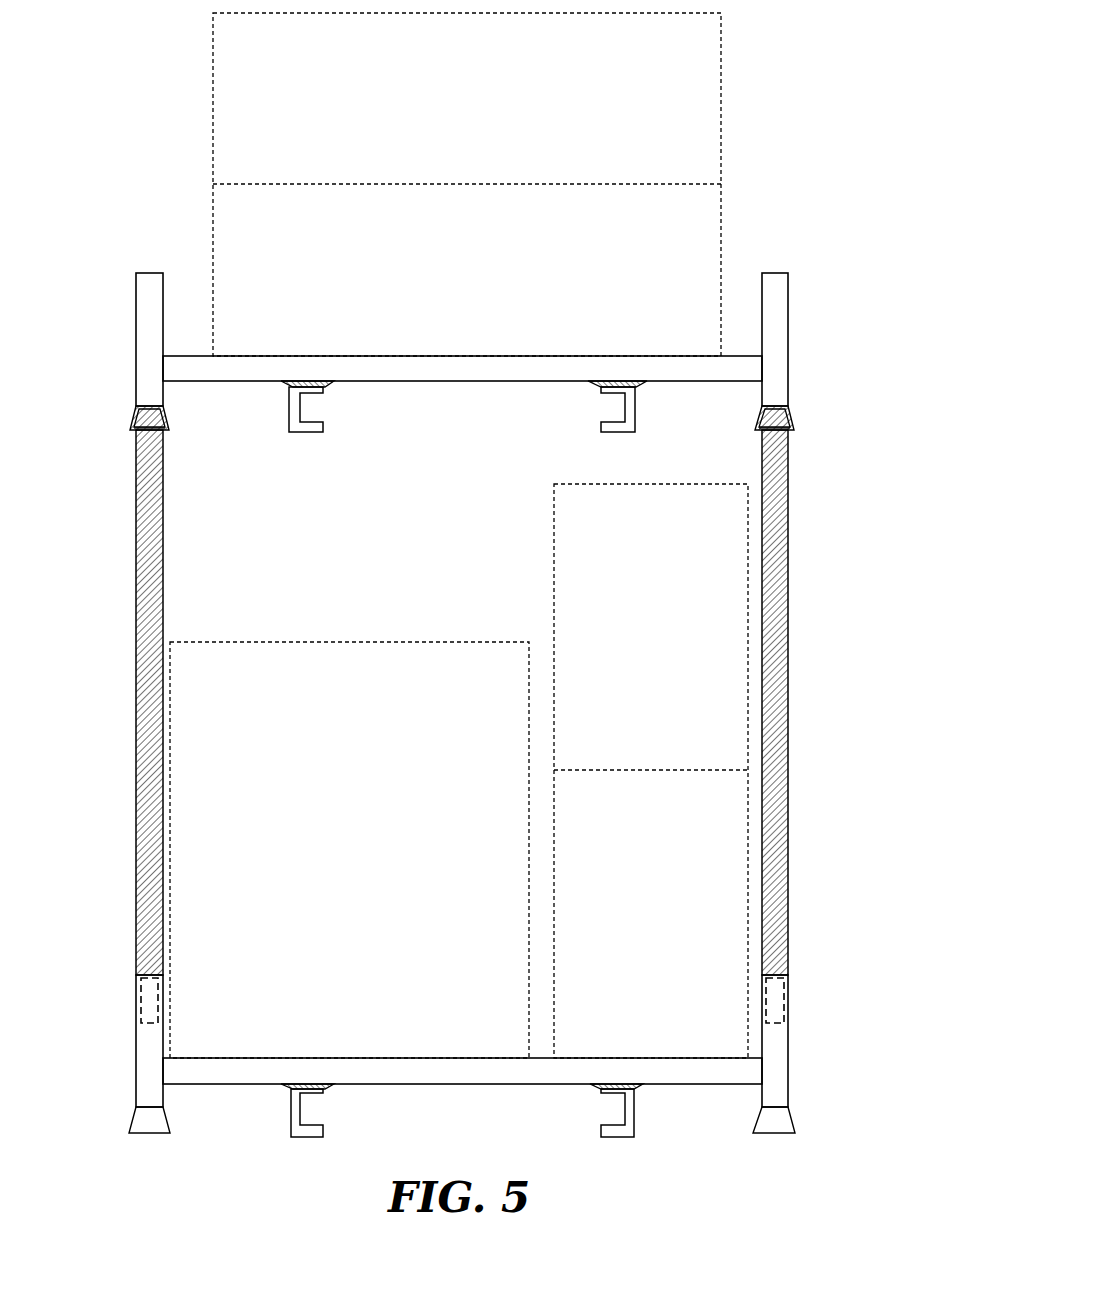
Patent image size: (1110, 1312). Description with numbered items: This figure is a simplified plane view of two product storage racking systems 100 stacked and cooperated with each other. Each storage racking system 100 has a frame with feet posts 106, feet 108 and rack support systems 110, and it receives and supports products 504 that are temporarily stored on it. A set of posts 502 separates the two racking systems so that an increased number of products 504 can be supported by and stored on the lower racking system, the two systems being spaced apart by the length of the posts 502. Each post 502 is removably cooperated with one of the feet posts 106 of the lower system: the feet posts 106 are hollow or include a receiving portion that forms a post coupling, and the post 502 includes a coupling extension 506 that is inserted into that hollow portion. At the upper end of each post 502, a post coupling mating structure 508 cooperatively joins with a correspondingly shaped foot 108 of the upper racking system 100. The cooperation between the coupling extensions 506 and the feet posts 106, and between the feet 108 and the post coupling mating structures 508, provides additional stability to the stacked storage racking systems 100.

The product storage racking system 100 is at (110, 310).
The feet posts 106 is at (783, 297).
The feet 108 is at (132, 420).
The rack support systems 110 is at (293, 427).
The posts 502 is at (142, 643).
The products 504 is at (723, 67).
The coupling extension 506 is at (142, 1000).
The post coupling mating structure 508 is at (135, 432).